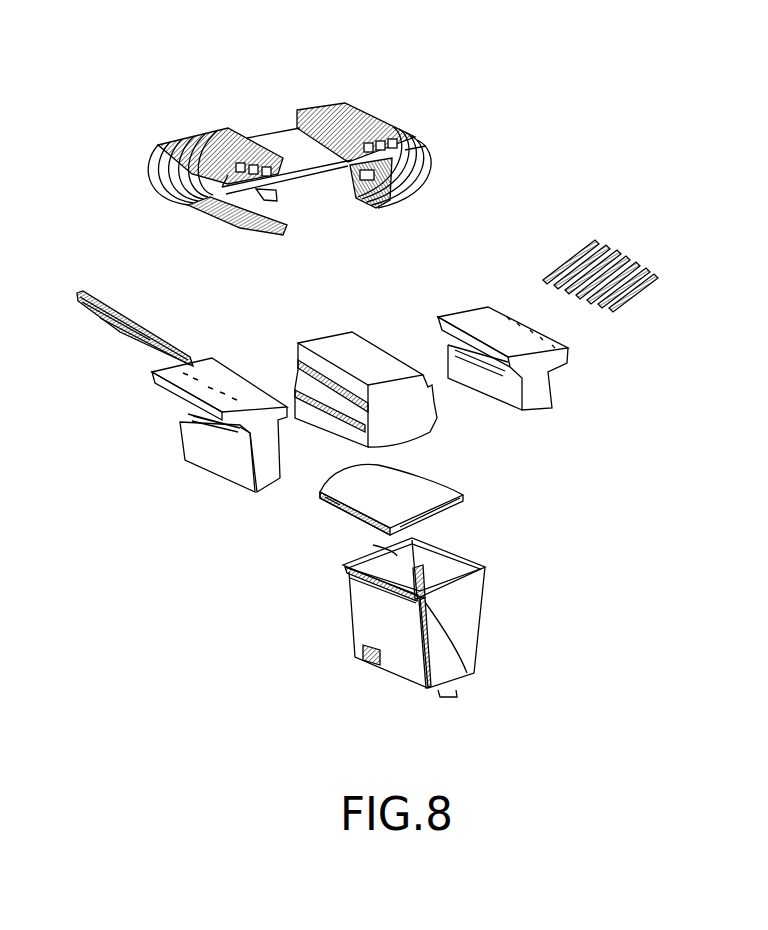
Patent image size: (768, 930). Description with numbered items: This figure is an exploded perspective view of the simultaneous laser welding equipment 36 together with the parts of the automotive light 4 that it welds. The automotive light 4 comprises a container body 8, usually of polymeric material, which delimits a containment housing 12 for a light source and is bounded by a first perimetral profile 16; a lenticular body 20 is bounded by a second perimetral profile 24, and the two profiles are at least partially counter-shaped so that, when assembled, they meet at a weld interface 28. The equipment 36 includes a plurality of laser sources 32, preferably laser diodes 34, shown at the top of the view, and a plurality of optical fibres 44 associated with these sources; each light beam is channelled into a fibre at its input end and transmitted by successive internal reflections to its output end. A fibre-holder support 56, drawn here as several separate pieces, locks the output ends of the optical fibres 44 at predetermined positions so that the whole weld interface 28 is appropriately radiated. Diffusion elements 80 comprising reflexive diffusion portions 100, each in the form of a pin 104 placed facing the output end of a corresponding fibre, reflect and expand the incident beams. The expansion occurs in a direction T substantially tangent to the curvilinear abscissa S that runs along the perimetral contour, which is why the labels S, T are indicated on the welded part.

The automotive light 4 is at (495, 591).
The container body 8 is at (453, 627).
The containment housing 12 is at (365, 545).
The first perimetral profile 16 is at (468, 562).
The lenticular body 20 is at (420, 493).
The second perimetral profile 24 is at (333, 507).
The weld interface 28 is at (218, 413).
The laser sources 32 is at (289, 123).
The laser diodes 34 is at (328, 110).
The simultaneous laser welding equipment 36 is at (567, 153).
The optical fibres 44 is at (422, 148).
The fibre-holder support 56 is at (0, 363).
The diffusion elements 80 is at (371, 245).
The reflexive diffusion portions 100 is at (371, 245).
The pin 104 is at (118, 307).
The curvilinear abscissa S is at (438, 646).
The direction tangent to the curvilinear abscissa T is at (467, 673).